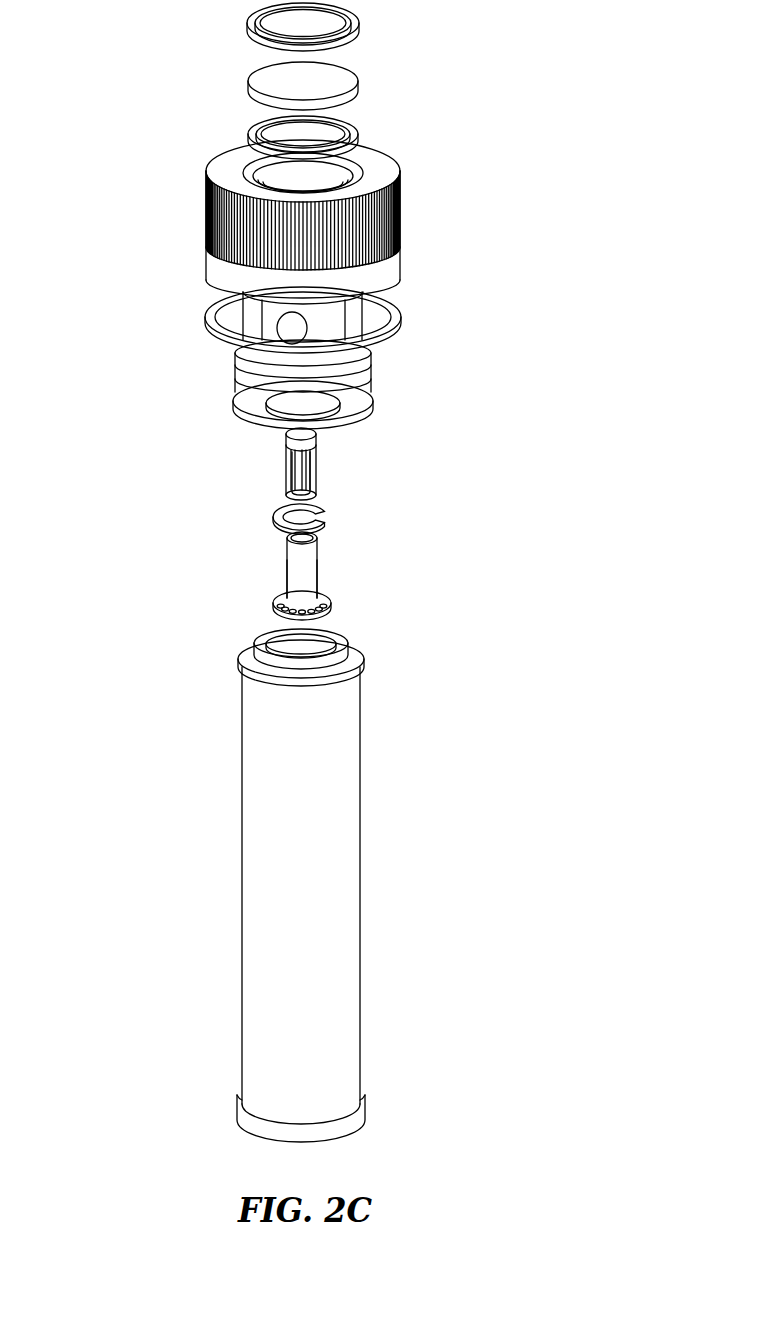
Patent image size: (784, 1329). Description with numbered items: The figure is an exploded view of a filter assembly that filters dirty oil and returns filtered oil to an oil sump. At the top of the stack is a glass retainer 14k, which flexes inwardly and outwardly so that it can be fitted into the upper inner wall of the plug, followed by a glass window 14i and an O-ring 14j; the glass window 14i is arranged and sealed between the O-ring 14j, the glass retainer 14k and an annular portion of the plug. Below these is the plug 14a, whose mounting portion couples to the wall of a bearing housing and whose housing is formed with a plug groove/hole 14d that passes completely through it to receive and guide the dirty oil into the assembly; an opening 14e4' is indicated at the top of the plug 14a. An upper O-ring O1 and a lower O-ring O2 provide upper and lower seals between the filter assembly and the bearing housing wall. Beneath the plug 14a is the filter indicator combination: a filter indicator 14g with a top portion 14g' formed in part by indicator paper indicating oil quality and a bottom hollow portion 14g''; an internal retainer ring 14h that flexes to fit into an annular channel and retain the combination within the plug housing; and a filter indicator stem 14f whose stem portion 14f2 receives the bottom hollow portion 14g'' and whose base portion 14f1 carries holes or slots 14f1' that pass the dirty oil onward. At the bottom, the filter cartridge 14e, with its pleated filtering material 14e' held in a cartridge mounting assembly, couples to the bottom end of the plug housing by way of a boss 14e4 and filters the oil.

The glass retainer 14k is at (357, 24).
The glass window 14i is at (350, 87).
The O-ring 14j is at (357, 136).
The plug 14a is at (400, 173).
The cap opening 14e4' is at (194, 165).
The plug groove/hole 14d is at (273, 326).
The upper O-ring O1 is at (397, 306).
The lower O-ring O2 is at (367, 413).
The filter indicator 14g is at (205, 472).
The top portion 14g' is at (214, 433).
The bottom hollow portion 14g'' is at (351, 467).
The internal retainer ring 14h is at (330, 516).
The filter indicator stem 14f is at (242, 578).
The stem portion 14f2 is at (313, 585).
The base portion 14f1 is at (345, 607).
The holes, openings, apertures or slots 14f1' is at (245, 614).
The filter cartridge 14e is at (251, 891).
The pleated filtering material 14e' is at (260, 895).
The canister boss 14e4 is at (359, 660).